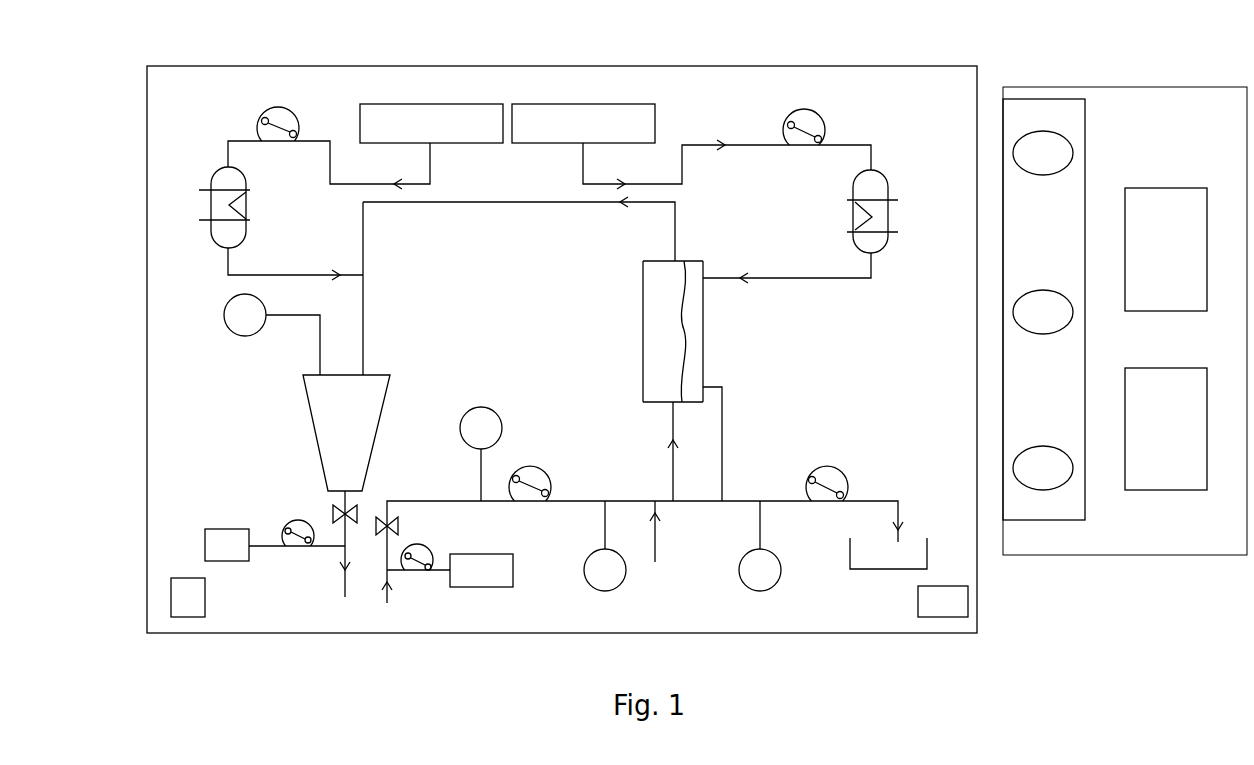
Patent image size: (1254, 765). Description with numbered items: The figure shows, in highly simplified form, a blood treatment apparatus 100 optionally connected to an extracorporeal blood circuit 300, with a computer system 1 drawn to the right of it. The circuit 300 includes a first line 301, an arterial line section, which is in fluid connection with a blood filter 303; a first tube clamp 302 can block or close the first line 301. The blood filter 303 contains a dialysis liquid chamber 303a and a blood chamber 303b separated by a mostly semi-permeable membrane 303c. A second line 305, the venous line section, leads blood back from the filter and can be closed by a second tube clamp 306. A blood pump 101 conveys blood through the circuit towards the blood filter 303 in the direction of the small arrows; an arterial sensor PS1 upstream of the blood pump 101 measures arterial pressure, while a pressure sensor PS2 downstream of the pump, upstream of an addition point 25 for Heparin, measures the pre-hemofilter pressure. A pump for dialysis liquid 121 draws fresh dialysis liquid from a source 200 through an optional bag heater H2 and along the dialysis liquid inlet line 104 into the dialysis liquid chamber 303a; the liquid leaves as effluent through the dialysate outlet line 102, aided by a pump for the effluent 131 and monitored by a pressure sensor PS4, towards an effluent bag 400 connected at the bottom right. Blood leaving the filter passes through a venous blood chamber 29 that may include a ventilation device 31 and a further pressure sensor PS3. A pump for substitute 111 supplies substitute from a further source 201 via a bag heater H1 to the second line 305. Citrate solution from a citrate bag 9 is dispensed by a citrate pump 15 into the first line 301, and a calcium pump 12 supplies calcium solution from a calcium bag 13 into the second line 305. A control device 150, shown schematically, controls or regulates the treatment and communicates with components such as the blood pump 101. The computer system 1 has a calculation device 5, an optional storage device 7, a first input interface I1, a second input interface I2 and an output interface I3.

The computer system 1 is at (1125, 289).
The calculation device 5 is at (1166, 249).
The storage device 7 is at (1166, 429).
The citrate bag 9 is at (481, 570).
The calcium pump 12 is at (283, 527).
The calcium bag 13 is at (227, 545).
The citrate pump 15 is at (430, 548).
The addition point for Heparin 25 is at (660, 548).
The venous blood chamber 29 is at (330, 413).
The ventilation device 31 is at (317, 357).
The blood treatment apparatus 100 is at (147, 325).
The blood pump 101 is at (547, 472).
The dialysate outlet line 102 is at (723, 462).
The dialysis liquid inlet line 104 is at (871, 278).
The pump for substitute 111 is at (285, 107).
The pump for dialysis liquid 121 is at (825, 127).
The pump for the effluent 131 is at (828, 467).
The control device 150 is at (192, 602).
The source of dialysis liquid 200 is at (583, 123).
The source of substitute 201 is at (431, 123).
The extracorporeal blood circuit 300 is at (447, 288).
The first line 301 is at (403, 500).
The tube clamp 302 is at (400, 525).
The blood filter 303 is at (667, 327).
The dialysis liquid chamber 303a is at (695, 350).
The blood chamber 303b is at (658, 373).
The semi-permeable membrane 303c is at (682, 312).
The second line 305 is at (422, 202).
The tube clamp 306 is at (333, 513).
The effluent bag 400 is at (893, 569).
The bag heater H1 is at (215, 207).
The bag heater H2 is at (884, 211).
The arterial sensor PS1 is at (481, 443).
The pressure sensor PS2 is at (605, 560).
The pressure sensor PS3 is at (245, 328).
The pressure sensor PS4 is at (760, 560).
The first input interface I1 is at (1043, 153).
The second input interface I2 is at (1043, 312).
The output interface I3 is at (1043, 468).